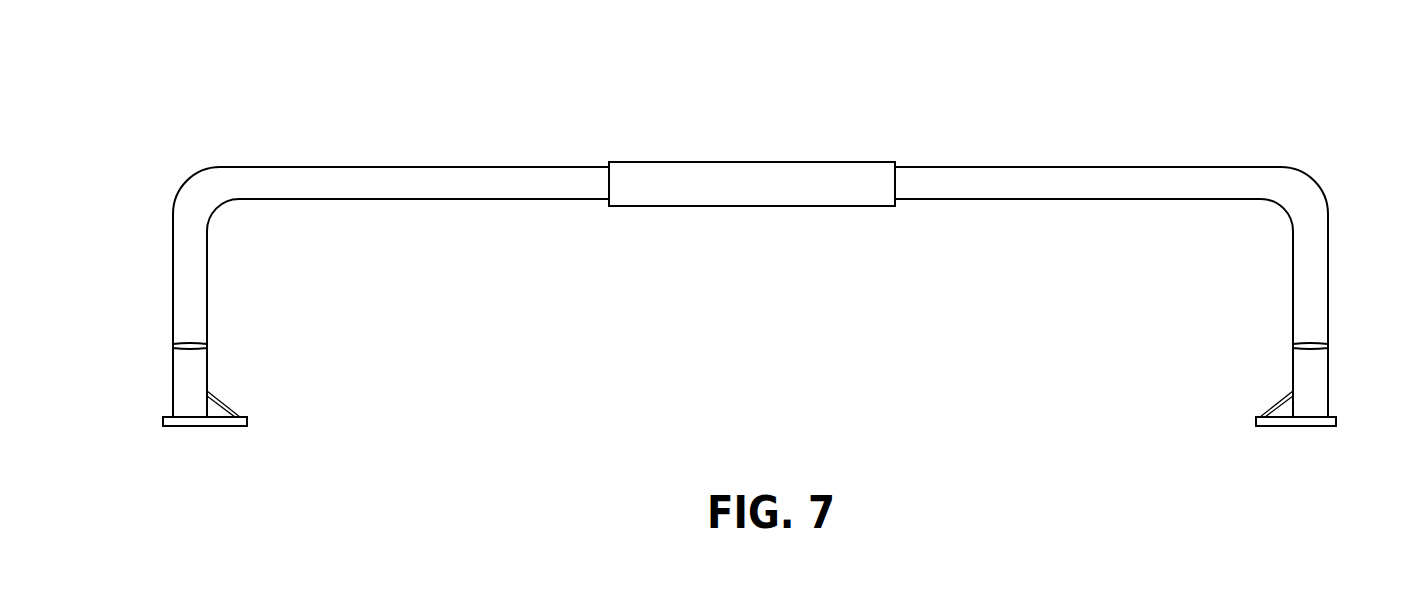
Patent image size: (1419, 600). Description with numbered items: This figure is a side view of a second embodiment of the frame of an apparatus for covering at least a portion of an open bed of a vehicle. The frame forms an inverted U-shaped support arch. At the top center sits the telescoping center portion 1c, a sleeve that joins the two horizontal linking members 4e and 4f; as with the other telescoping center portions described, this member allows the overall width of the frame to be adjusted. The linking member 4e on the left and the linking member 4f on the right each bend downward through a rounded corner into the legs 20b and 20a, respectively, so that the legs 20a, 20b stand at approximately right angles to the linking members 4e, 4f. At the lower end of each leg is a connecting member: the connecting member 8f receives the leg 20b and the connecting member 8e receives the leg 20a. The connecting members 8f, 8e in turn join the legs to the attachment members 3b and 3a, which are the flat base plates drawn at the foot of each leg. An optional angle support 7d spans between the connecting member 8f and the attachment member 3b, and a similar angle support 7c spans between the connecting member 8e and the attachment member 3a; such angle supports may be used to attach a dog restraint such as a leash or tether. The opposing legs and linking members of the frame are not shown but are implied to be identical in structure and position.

The telescoping center portion 1c is at (742, 162).
The linking member 4e is at (363, 167).
The linking member 4f is at (1155, 167).
The leg 20b is at (173, 293).
The leg 20a is at (1330, 290).
The connecting member 8f is at (172, 387).
The connecting member 8e is at (1330, 382).
The angle support 7d is at (208, 396).
The angle support 7c is at (1292, 396).
The attachment member 3b is at (207, 427).
The attachment member 3a is at (1293, 427).